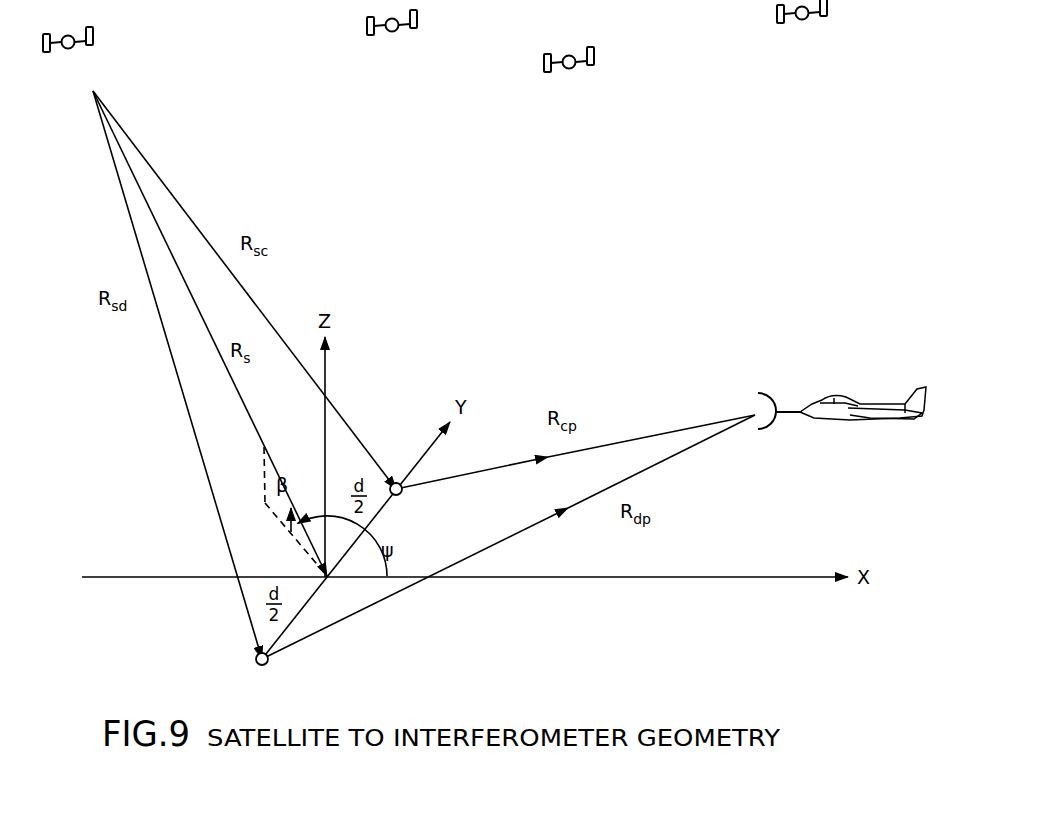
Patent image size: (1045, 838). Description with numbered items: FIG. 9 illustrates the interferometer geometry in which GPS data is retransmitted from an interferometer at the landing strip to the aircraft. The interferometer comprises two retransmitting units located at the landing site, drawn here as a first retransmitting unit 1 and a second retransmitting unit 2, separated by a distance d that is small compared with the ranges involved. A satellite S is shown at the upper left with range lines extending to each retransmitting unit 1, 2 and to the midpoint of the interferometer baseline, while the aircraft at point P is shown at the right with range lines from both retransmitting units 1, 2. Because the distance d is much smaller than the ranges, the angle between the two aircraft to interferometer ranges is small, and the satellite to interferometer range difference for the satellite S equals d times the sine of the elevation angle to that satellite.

The first interferometer antenna (C) 1 is at (402, 486).
The second interferometer antenna (D) 2 is at (271, 674).
The satellite S is at (226, 369).
The target aircraft position P is at (833, 397).